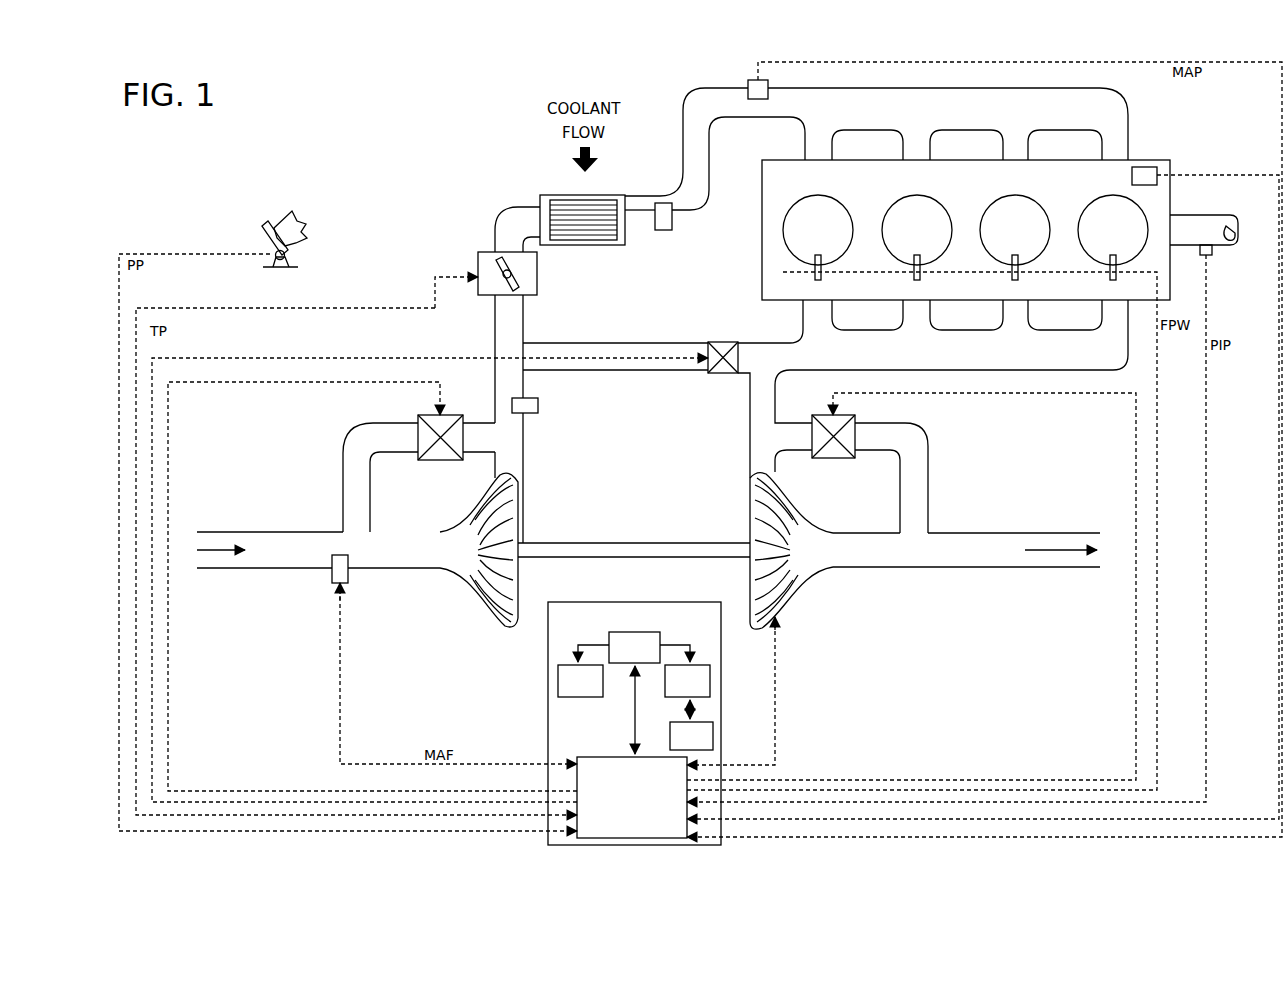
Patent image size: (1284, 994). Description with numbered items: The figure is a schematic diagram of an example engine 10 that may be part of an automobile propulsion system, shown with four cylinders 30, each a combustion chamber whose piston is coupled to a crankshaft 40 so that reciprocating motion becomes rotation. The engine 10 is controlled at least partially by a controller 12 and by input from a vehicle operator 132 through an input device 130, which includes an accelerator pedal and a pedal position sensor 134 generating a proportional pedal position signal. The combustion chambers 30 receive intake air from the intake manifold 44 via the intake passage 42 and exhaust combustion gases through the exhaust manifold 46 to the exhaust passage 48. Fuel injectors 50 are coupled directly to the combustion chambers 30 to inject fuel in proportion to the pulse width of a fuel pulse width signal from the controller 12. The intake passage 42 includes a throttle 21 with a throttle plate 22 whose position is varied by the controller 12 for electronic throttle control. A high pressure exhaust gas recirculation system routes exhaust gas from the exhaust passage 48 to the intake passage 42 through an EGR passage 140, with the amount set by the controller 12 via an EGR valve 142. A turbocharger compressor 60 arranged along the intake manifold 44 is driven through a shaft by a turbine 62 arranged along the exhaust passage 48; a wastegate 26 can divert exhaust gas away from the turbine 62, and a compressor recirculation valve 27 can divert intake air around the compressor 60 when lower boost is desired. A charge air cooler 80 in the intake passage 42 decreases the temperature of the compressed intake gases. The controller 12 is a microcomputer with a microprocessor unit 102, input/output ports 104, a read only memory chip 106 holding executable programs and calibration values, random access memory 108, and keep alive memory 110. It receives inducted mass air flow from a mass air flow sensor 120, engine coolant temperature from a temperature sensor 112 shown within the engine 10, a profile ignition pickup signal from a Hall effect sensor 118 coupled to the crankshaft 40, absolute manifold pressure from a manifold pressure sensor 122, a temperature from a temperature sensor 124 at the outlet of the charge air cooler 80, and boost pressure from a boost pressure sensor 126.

The engine 10 is at (1062, 186).
The controller 12 is at (591, 735).
The throttle 21 is at (490, 252).
The throttle plate 22 is at (518, 285).
The wastegate 26 is at (858, 428).
The compressor recirculation valve 27 is at (418, 424).
The cylinder 30 is at (1122, 239).
The crankshaft 40 is at (1207, 215).
The intake passage 42 is at (273, 559).
The intake manifold 44 is at (850, 118).
The exhaust manifold 46 is at (821, 359).
The exhaust passage 48 is at (891, 557).
The fuel injector 50 is at (942, 275).
The compressor 60 is at (488, 590).
The turbine 62 is at (791, 505).
The charge air cooler 80 is at (549, 195).
The microprocessor unit 102 is at (606, 641).
The input/output ports 104 is at (673, 835).
The read only memory chip 106 is at (558, 689).
The random access memory 108 is at (711, 668).
The keep alive memory 110 is at (713, 723).
The temperature sensor 112 is at (1148, 167).
The Hall effect sensor 118 is at (1211, 258).
The mass air flow sensor 120 is at (351, 575).
The manifold pressure sensor 122 is at (748, 87).
The temperature sensor 124 is at (666, 231).
The boost pressure sensor 126 is at (538, 409).
The input device 130 is at (266, 237).
The vehicle operator 132 is at (306, 226).
The pedal position sensor 134 is at (291, 256).
The EGR passage 140 is at (612, 343).
The EGR valve 142 is at (722, 342).